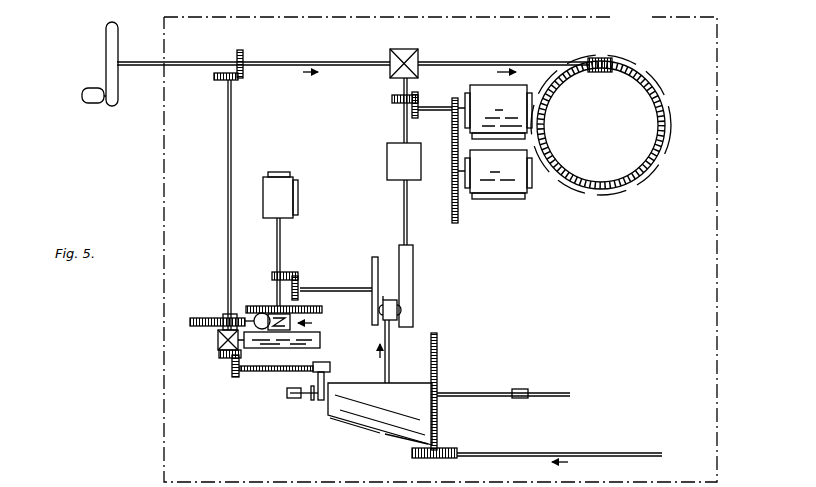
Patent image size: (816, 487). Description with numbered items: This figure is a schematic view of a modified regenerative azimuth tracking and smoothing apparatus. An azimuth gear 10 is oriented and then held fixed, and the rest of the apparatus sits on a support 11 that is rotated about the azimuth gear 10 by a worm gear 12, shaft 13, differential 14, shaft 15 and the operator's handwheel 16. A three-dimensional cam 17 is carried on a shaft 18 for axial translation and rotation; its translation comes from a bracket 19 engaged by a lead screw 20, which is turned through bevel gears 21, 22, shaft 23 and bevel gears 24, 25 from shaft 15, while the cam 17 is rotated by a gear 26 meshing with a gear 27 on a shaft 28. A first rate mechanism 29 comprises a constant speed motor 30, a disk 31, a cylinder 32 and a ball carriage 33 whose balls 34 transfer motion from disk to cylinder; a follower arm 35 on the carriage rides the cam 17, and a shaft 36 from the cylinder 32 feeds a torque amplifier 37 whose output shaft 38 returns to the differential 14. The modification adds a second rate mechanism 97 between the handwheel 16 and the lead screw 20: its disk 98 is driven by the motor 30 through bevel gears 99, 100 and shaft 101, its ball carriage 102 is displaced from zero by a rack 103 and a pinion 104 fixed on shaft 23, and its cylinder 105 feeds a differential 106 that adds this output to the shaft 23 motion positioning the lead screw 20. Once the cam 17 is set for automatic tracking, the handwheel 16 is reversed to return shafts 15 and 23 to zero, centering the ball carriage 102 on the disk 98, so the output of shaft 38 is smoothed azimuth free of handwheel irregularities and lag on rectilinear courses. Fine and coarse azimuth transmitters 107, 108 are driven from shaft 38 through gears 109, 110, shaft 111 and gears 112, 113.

The azimuth gear 10 is at (668, 135).
The support 11 is at (637, 17).
The worm gear 12 is at (614, 60).
The shaft 13 is at (489, 62).
The differential 14 is at (402, 50).
The shaft 15 is at (340, 60).
The handwheel 16 is at (118, 32).
The three-dimensional cam 17 is at (375, 432).
The shaft 18 is at (478, 392).
The bracket 19 is at (318, 376).
The lead screw 20 is at (270, 373).
The bevel gear 21 is at (232, 370).
The bevel gear 22 is at (219, 356).
The shaft 23 is at (228, 158).
The bevel gear 24 is at (214, 77).
The bevel gear 25 is at (244, 58).
The gear 26 is at (438, 356).
The gear 27 is at (434, 462).
The shaft 28 is at (559, 447).
The rate mechanism 29 is at (385, 292).
The constant speed motor 30 is at (298, 204).
The disk 31 is at (372, 276).
The cylinder 32 is at (411, 284).
The ball carriage 33 is at (400, 313).
The balls 34 is at (398, 308).
The follower arm 35 is at (390, 366).
The shaft 36 is at (408, 230).
The torque amplifier 37 is at (387, 160).
The output shaft 38 is at (403, 127).
The second rate mechanism 97 is at (290, 322).
The disk 98 is at (270, 305).
The bevel gear 99 is at (290, 272).
The bevel gear 100 is at (300, 284).
The shaft 101 is at (334, 291).
The ball carriage 102 is at (256, 316).
The rack 103 is at (197, 318).
The pinion 104 is at (223, 318).
The cylinder 105 is at (314, 340).
The differential 106 is at (218, 340).
The fine azimuth transmitter 107 is at (516, 194).
The coarse azimuth transmitter 108 is at (487, 130).
The gear 109 is at (392, 99).
The gear 110 is at (419, 97).
The shaft 111 is at (438, 111).
The gear 112 is at (458, 98).
The gear 113 is at (452, 182).